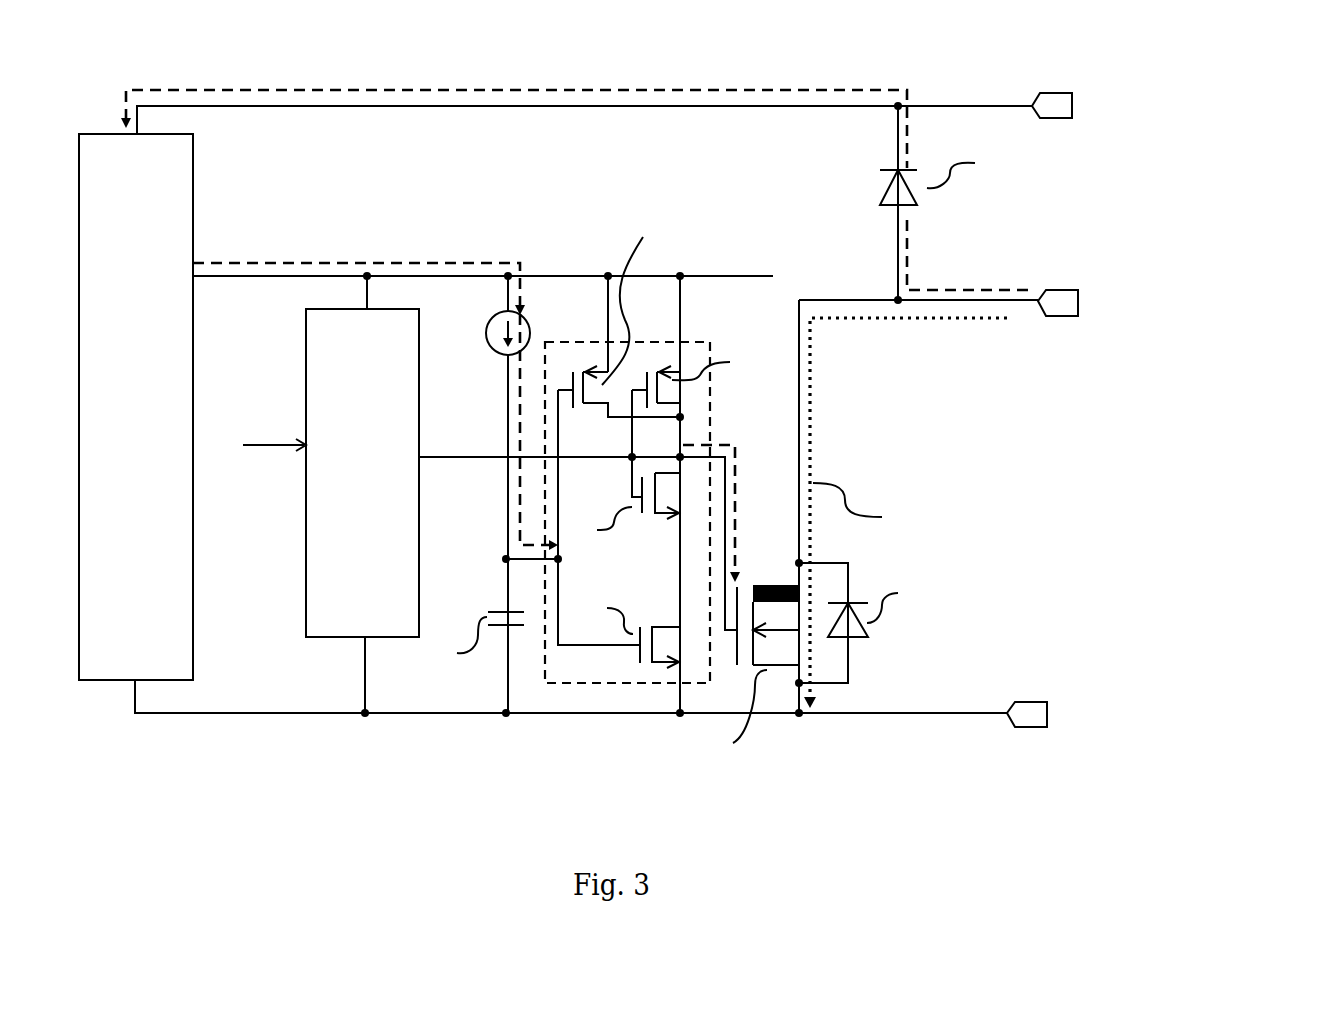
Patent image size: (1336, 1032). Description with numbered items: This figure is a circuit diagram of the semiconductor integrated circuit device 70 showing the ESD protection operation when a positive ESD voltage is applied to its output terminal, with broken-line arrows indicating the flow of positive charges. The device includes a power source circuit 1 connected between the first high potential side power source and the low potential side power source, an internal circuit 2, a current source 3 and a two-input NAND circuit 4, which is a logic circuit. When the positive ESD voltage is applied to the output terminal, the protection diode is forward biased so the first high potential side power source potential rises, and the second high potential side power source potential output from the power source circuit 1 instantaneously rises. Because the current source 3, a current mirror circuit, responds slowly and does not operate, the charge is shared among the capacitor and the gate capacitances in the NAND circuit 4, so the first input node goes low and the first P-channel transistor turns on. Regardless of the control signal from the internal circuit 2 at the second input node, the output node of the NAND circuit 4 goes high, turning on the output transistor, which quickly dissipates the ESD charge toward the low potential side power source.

The power source circuit 1 is at (192, 204).
The internal circuit 2 is at (305, 572).
The current source 3 is at (535, 317).
The 2-input NAND circuit 4 is at (700, 357).
The semiconductor integrated circuit device 70 is at (1105, 207).